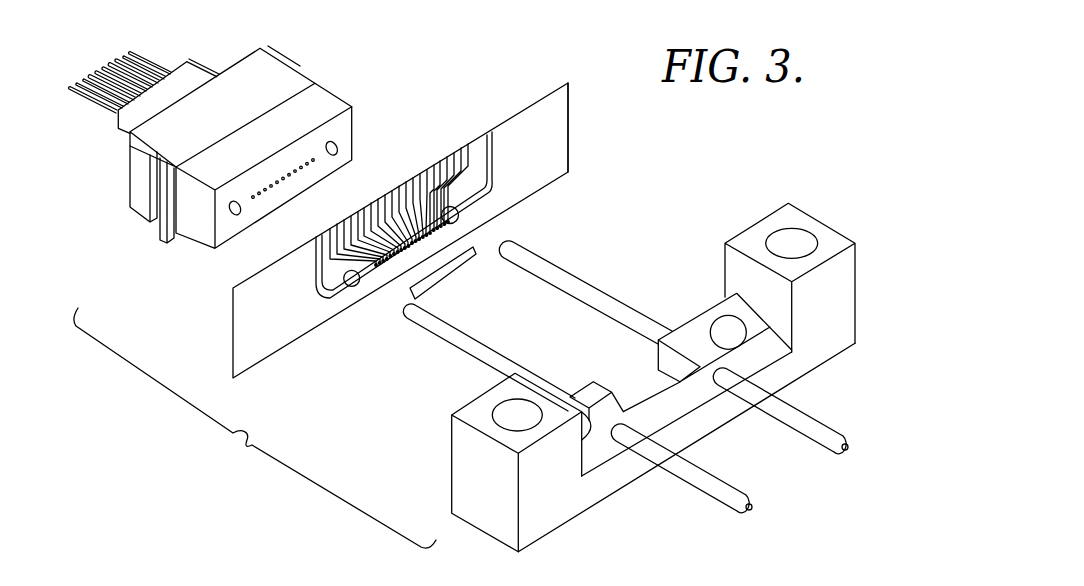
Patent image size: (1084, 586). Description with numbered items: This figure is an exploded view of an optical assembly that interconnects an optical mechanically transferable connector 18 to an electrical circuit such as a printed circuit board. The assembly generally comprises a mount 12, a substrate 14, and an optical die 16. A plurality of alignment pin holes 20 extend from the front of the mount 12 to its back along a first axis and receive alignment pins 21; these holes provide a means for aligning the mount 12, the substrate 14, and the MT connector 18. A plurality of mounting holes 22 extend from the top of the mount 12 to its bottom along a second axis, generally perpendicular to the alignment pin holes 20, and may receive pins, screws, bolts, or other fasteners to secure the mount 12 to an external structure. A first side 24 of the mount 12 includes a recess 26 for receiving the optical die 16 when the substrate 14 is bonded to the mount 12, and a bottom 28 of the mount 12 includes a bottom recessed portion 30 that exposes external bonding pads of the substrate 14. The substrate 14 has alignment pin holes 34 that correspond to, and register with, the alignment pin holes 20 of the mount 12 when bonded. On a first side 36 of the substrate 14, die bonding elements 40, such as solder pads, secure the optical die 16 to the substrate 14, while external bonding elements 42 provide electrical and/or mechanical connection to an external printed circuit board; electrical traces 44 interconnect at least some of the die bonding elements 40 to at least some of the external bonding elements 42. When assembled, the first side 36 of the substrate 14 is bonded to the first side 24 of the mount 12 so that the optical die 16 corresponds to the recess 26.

The mount 12 is at (462, 456).
The substrate 14 is at (546, 87).
The optical die 16 is at (460, 271).
The optical mechanically transferable (MT) connector 18 is at (257, 70).
The alignment pin holes 20 is at (630, 427).
The alignment pins 21 is at (723, 490).
The mounting holes 22 is at (803, 242).
The first side 24 is at (697, 316).
The recess 26 is at (645, 392).
The bottom 28 is at (781, 214).
The bottom recessed portion 30 is at (630, 363).
The alignment pin holes 34 is at (345, 286).
The first side 36 is at (560, 141).
The die bonding elements 40 is at (414, 192).
The external bonding elements 42 is at (473, 141).
The electrical traces 44 is at (463, 188).